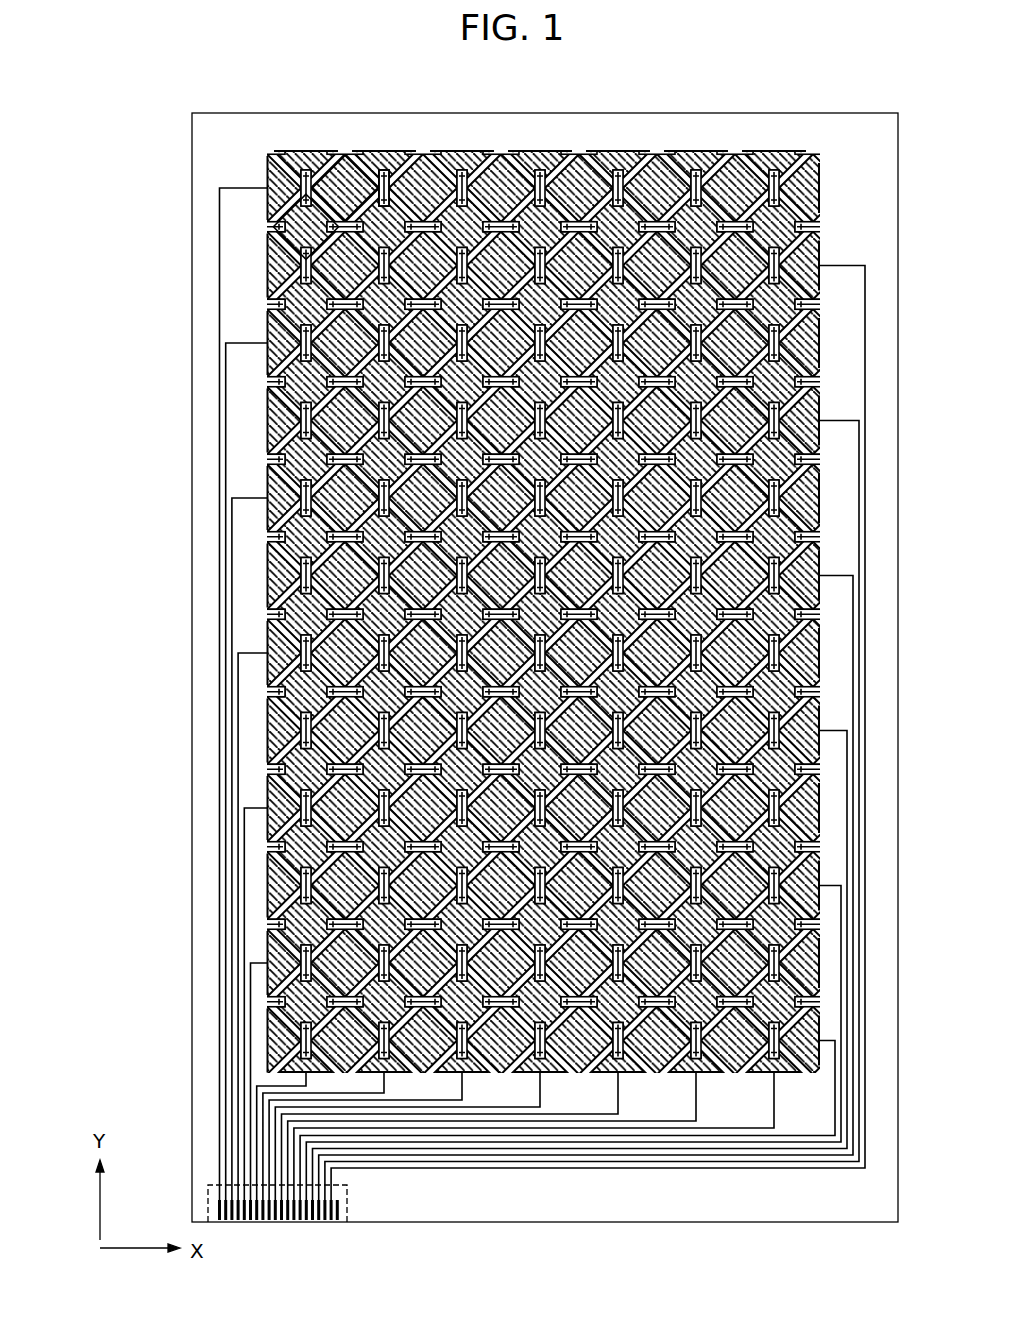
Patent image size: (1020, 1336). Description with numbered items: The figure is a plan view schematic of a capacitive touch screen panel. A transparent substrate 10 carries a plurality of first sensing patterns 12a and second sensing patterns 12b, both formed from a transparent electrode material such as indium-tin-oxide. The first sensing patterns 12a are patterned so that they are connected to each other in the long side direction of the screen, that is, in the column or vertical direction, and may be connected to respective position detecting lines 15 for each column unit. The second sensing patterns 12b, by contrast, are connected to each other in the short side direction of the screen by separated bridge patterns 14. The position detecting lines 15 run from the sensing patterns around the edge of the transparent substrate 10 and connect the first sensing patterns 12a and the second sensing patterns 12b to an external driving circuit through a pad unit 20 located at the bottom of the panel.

The transparent substrate 10 is at (688, 113).
The first sensing patterns 12a is at (304, 195).
The second sensing patterns 12b is at (348, 172).
The bridge patterns 14 is at (387, 190).
The position detecting lines 15 is at (221, 239).
The pad unit 20 is at (348, 1205).